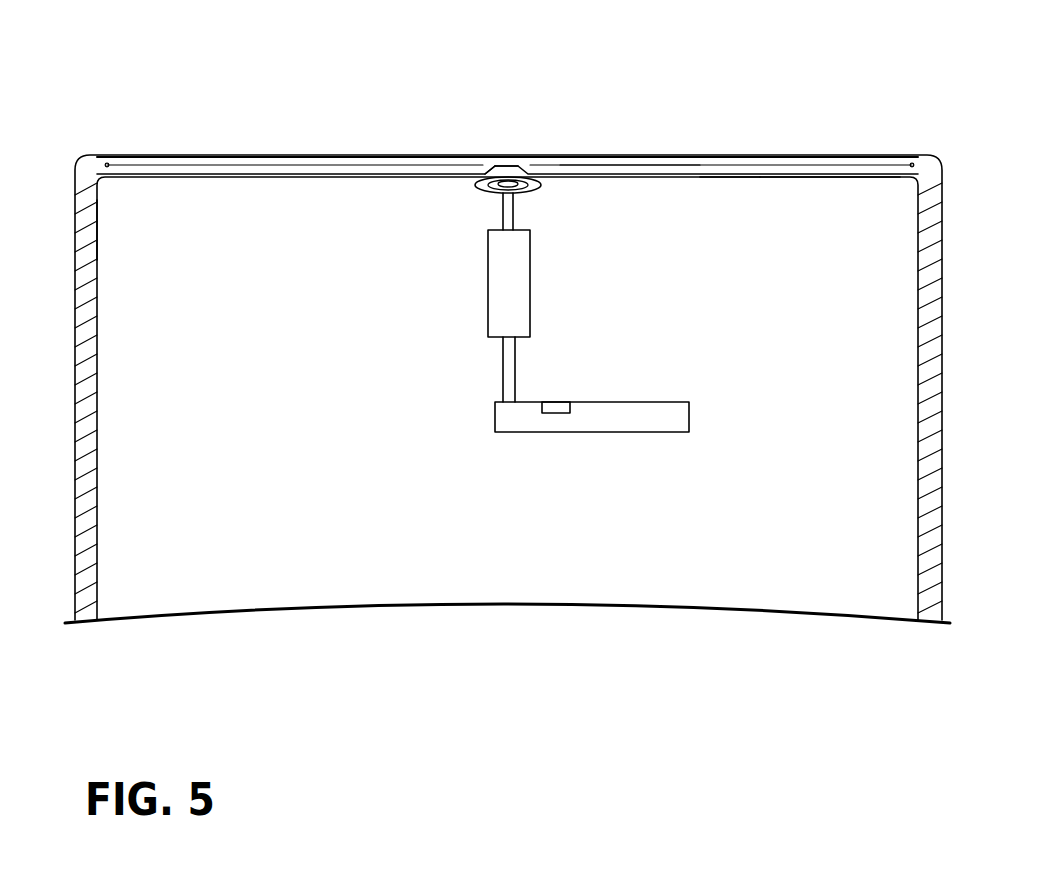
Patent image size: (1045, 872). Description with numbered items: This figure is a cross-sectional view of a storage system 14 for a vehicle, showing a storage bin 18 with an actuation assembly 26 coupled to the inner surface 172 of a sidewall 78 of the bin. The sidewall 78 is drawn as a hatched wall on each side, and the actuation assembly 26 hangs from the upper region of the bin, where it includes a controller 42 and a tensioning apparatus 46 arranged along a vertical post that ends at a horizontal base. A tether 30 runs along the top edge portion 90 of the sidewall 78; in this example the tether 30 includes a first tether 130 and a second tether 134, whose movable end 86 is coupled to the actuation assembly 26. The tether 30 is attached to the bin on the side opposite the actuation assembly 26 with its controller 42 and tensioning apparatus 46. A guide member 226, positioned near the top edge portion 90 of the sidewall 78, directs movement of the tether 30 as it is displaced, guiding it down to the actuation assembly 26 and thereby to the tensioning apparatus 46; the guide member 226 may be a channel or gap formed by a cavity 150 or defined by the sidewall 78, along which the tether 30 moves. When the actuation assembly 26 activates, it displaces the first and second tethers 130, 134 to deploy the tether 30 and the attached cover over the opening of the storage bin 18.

The storage system 14 is at (188, 133).
The storage bin 18 is at (887, 152).
The actuation assembly 26 is at (473, 355).
The tether 30 is at (296, 159).
The controller 42 is at (557, 410).
The tensioning apparatus 46 is at (548, 299).
The sidewall 78 is at (760, 222).
The movable end 86 is at (518, 222).
The top edge portion 90 is at (138, 199).
The first tether 130 is at (471, 166).
The second tether 134 is at (667, 165).
The cavity 150 is at (507, 176).
The inner surface 172 is at (845, 233).
The guide member 226 is at (522, 176).